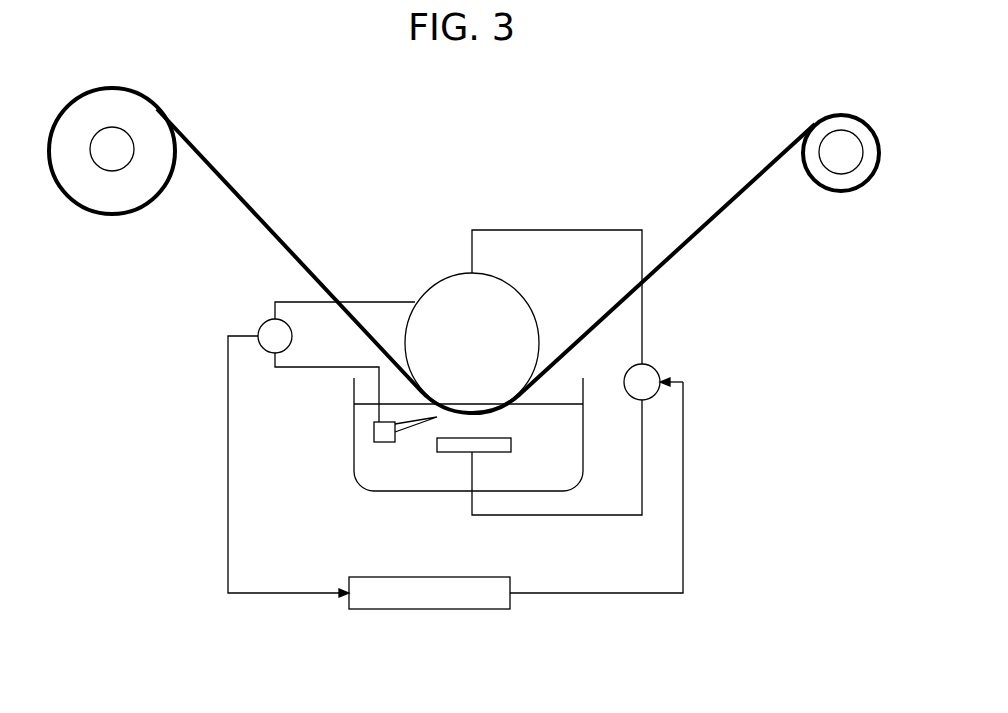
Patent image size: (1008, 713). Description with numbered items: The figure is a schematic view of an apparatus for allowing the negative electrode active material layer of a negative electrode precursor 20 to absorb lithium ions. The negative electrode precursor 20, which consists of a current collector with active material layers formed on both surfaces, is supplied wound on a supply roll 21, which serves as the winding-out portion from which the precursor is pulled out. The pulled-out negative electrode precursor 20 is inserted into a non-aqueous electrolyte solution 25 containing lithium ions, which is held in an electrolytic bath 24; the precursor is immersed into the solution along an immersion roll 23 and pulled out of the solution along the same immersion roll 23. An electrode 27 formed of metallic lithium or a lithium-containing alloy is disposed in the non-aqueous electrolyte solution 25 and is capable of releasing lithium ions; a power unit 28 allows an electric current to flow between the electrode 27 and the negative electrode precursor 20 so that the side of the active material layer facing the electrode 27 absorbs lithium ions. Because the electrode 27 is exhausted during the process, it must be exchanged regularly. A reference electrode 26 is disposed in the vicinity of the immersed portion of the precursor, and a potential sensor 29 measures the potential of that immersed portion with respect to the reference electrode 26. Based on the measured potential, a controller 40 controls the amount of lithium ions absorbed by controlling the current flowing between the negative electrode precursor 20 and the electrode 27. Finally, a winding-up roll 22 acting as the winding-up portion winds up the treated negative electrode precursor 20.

The negative electrode precursor 20 is at (223, 172).
The supply roll 21 is at (125, 145).
The winding-up roll 22 is at (828, 142).
The immersion roll 23 is at (455, 290).
The electrolytic bath 24 is at (353, 447).
The non-aqueous electrolyte solution 25 is at (375, 478).
The reference electrode 26 is at (378, 432).
The electrode 27 is at (462, 453).
The power unit 28 is at (658, 375).
The potential sensor 29 is at (258, 325).
The controller 40 is at (507, 610).